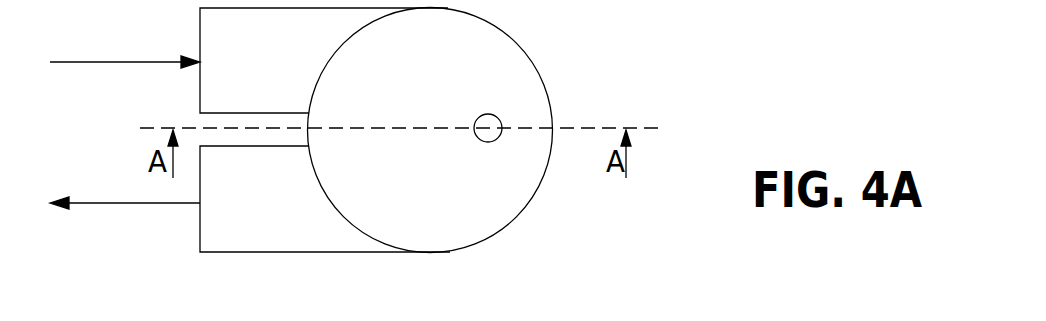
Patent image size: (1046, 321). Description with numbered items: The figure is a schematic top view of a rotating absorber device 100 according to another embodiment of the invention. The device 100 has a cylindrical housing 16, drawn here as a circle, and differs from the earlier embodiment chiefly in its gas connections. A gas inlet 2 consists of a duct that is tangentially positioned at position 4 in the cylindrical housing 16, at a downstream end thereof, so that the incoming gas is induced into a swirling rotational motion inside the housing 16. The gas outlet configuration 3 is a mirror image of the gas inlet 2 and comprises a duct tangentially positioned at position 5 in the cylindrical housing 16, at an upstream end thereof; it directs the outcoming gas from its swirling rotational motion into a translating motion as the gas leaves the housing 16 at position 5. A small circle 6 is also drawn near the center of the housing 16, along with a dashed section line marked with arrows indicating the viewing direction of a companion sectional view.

The gas inlet 2 is at (125, 79).
The gas outlet configuration 3 is at (125, 188).
The position 4 is at (324, 60).
The position 5 is at (325, 199).
The port opening 6 is at (587, 12).
The cylindrical housing 16 is at (512, 220).
The rotating absorber device 100 is at (575, 212).